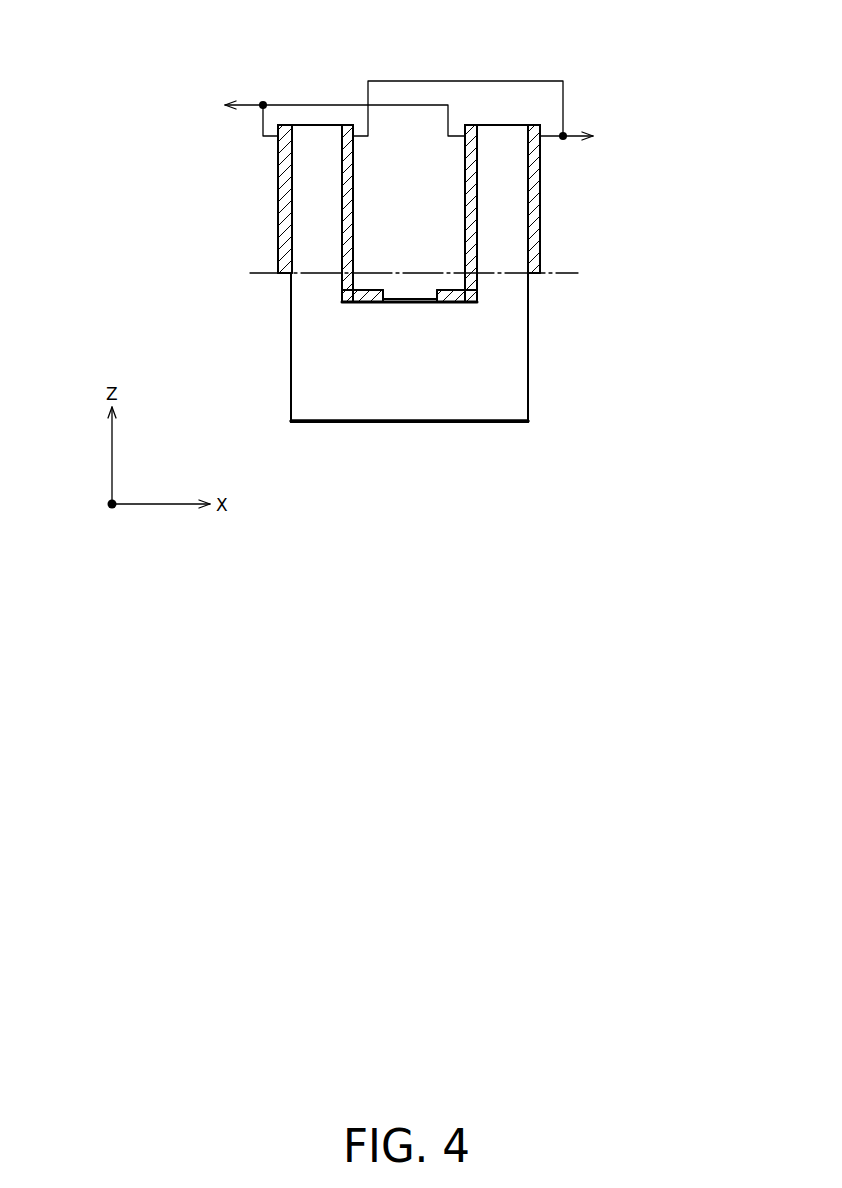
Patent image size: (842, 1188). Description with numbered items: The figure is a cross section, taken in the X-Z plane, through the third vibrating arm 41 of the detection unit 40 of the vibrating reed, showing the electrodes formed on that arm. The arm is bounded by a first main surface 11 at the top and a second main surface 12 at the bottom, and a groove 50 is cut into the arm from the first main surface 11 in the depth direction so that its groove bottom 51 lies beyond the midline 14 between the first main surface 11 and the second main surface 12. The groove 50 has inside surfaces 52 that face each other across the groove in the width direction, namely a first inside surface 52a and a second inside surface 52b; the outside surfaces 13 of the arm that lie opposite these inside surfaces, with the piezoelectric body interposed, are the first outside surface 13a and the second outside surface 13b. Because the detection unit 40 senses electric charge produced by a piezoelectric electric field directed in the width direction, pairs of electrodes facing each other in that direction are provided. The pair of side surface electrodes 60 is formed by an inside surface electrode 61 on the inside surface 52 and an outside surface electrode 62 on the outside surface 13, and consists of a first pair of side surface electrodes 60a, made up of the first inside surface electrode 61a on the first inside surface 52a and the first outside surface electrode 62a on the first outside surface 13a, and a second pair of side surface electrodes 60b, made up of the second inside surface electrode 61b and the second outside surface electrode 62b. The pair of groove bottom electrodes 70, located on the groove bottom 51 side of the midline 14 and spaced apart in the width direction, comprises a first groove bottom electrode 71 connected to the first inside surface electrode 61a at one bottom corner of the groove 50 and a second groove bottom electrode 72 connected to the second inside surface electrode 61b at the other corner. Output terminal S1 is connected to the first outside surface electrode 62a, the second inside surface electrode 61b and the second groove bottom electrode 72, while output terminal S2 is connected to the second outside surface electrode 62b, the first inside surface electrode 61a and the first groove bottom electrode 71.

The first main surface 11 is at (332, 125).
The second main surface 12 is at (361, 423).
The outside surface 13 is at (410, 347).
The first outside surface 13a is at (291, 331).
The second outside surface 13b is at (530, 327).
The midline 14 is at (558, 273).
The detection unit 40 is at (409, 404).
The third vibrating arm 41 is at (441, 441).
The groove 50 is at (403, 142).
The groove bottom 51 is at (405, 298).
The inside surfaces 52 is at (410, 173).
The first inside surface 52a is at (343, 160).
The second inside surface 52b is at (477, 156).
The pair of side surface electrodes 60 is at (406, 213).
The first pair of side surface electrodes 60a is at (158, 148).
The second pair of side surface electrodes 60b is at (652, 155).
The inside surface electrode 61 is at (409, 213).
The first inside surface electrode 61a is at (352, 172).
The second inside surface electrode 61b is at (474, 214).
The outside surface electrode 62 is at (409, 199).
The first outside surface electrode 62a is at (279, 207).
The second outside surface electrode 62b is at (540, 177).
The pair of groove bottom electrodes 70 is at (587, 352).
The first groove bottom electrode 71 is at (365, 302).
The second groove bottom electrode 72 is at (458, 301).
The output terminal S1 is at (330, 115).
The output terminal S2 is at (488, 113).